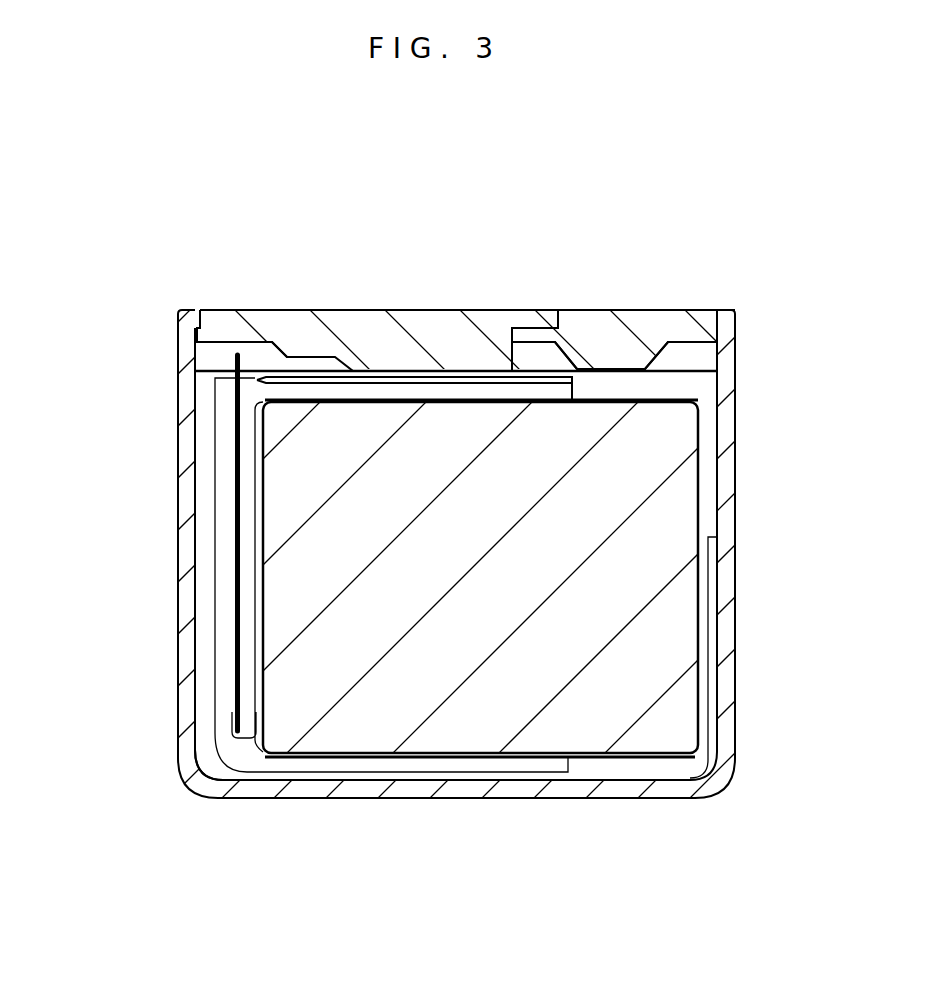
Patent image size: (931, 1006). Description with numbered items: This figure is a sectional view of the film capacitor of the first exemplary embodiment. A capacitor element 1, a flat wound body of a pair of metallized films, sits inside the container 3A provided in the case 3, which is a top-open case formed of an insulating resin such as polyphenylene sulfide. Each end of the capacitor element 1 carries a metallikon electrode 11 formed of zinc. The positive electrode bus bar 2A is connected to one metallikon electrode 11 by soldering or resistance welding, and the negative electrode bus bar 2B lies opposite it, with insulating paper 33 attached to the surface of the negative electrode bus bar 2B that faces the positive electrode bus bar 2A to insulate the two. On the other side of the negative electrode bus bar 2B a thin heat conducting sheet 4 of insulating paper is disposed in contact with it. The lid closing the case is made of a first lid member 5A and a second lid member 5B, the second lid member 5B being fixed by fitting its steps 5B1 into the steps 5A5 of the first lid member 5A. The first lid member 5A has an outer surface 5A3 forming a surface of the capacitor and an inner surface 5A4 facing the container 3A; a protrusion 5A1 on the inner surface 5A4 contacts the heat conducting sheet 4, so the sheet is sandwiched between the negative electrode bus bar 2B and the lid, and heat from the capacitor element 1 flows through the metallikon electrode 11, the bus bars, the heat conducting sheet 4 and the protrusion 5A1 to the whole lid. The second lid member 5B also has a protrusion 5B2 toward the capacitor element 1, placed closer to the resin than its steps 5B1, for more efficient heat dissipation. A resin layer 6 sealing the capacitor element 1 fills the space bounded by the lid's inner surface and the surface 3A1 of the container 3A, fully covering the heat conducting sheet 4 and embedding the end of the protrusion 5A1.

The capacitor element 1 is at (645, 695).
The positive electrode bus bar 2A is at (223, 455).
The negative electrode bus bar 2B is at (275, 391).
The case 3 is at (188, 558).
The container 3A is at (207, 602).
The surface of container 3A1 is at (207, 648).
The heat conducting sheet 4 is at (536, 395).
The first lid member 5A is at (368, 325).
The protrusion 5A1 is at (447, 363).
The outer surface 5A3 is at (323, 310).
The inner surface 5A4 is at (230, 351).
The step 5A5 is at (545, 328).
The second lid member 5B is at (667, 327).
The step 5B1 is at (538, 332).
The protrusion 5B2 is at (612, 352).
The resin layer 6 is at (203, 510).
The metallikon electrode 11 is at (663, 393).
The insulating paper 33 is at (232, 362).